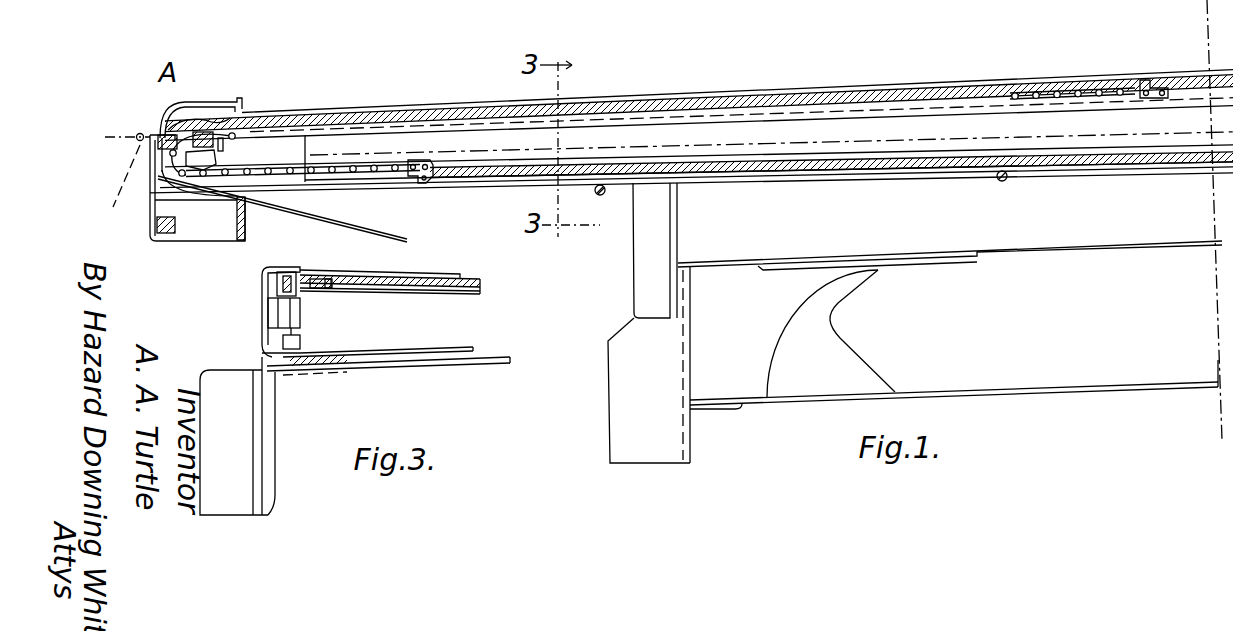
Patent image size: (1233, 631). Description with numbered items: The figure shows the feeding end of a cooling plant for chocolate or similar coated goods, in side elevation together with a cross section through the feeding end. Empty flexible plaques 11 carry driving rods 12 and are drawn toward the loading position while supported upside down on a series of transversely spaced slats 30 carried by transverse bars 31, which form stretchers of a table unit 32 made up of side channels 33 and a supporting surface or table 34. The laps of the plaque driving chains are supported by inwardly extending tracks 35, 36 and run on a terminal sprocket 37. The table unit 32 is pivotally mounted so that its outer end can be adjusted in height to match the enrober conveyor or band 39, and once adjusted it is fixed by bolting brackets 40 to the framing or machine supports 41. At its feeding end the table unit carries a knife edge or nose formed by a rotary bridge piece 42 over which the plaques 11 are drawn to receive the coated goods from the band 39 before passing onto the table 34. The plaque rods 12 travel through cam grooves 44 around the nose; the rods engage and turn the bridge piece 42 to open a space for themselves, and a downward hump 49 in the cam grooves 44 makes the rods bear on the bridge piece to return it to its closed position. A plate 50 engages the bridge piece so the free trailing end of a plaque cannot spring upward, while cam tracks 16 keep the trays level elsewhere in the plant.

In FIG. 1, the flexible plaque 11 is at (374, 189).
In FIG. 1, the driving rod 12 is at (424, 184).
In FIG. 3, the driving rod 12 is at (367, 277).
In FIG. 1, the cam track 16 is at (849, 345).
In FIG. 1, the slat 30 is at (1060, 166).
In FIG. 1, the transverse bar 31 is at (602, 196).
In FIG. 3, the transverse bar 31 is at (473, 360).
In FIG. 1, the table unit 32 is at (808, 131).
In FIG. 3, the table unit 32 is at (442, 319).
In FIG. 3, the side channel 33 is at (262, 310).
In FIG. 1, the table 34 is at (412, 115).
In FIG. 3, the table 34 is at (480, 284).
In FIG. 3, the inwardly extending track 35 is at (311, 295).
In FIG. 3, the inwardly extending track 36 is at (283, 345).
In FIG. 1, the terminal sprocket 37 is at (197, 160).
In FIG. 1, the enrober conveyor band 39 is at (117, 128).
In FIG. 1, the bracket 40 is at (657, 240).
In FIG. 1, the machine support 41 is at (640, 406).
In FIG. 1, the rotary bridge piece 42 is at (210, 128).
In FIG. 1, the cam groove 44 is at (207, 190).
In FIG. 1, the downward hump 49 is at (203, 119).
In FIG. 1, the plate 50 is at (151, 178).